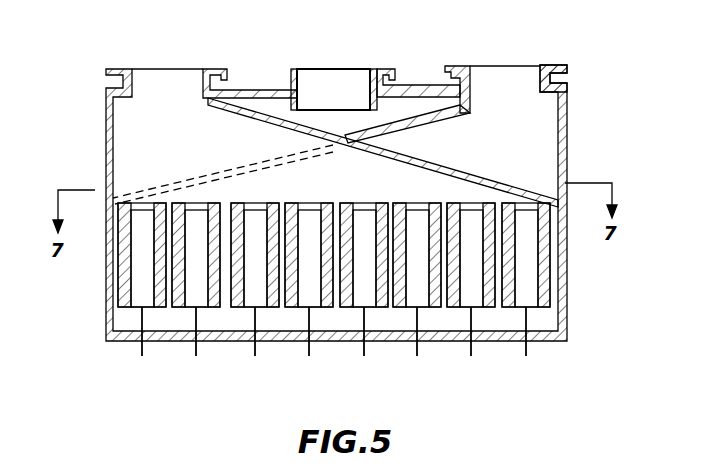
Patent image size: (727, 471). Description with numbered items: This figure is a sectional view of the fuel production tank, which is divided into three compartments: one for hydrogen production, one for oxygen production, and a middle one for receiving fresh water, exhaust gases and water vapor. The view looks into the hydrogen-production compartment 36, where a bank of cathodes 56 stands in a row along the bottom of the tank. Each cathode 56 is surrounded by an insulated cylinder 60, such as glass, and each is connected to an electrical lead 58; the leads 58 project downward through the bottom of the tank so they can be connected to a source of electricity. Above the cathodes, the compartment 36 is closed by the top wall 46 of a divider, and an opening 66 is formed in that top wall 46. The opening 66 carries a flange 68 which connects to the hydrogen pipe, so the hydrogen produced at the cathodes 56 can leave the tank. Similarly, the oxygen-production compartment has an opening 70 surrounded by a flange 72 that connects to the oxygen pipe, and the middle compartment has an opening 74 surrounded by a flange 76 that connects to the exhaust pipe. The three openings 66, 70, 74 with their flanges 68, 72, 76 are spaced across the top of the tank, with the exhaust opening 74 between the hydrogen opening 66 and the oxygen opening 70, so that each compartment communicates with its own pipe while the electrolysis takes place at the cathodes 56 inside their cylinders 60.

The compartment 36 is at (122, 150).
The top wall 46 is at (430, 152).
The cathodes 56 is at (468, 218).
The electrical leads 58 is at (197, 348).
The insulated cylinder 60 is at (503, 202).
The opening 66 is at (162, 77).
The flange 68 is at (213, 72).
The opening 70 is at (498, 73).
The flange 72 is at (553, 63).
The opening 74 is at (343, 72).
The flange 76 is at (387, 65).